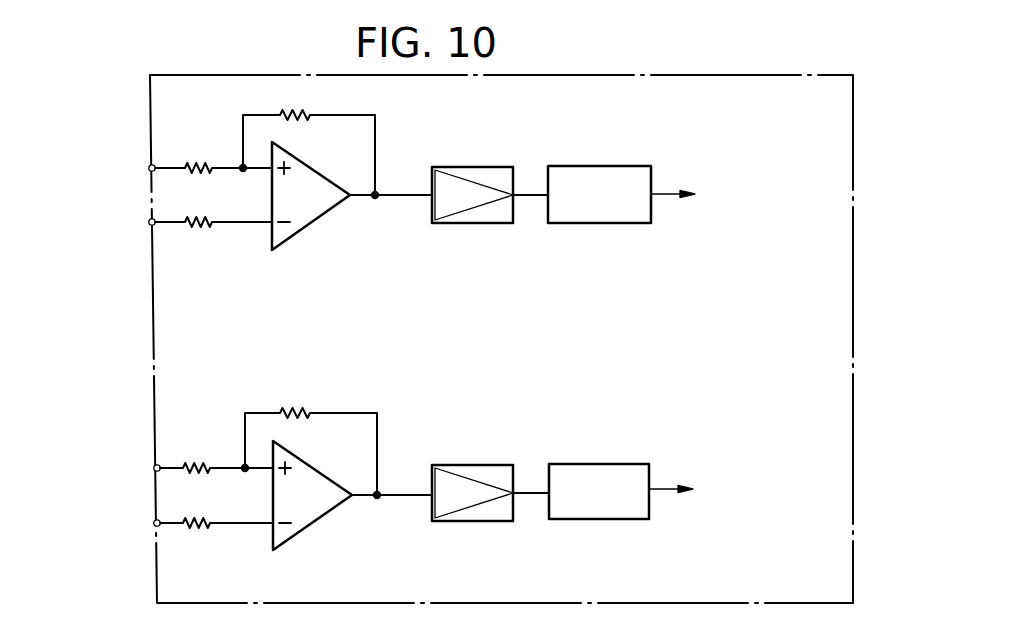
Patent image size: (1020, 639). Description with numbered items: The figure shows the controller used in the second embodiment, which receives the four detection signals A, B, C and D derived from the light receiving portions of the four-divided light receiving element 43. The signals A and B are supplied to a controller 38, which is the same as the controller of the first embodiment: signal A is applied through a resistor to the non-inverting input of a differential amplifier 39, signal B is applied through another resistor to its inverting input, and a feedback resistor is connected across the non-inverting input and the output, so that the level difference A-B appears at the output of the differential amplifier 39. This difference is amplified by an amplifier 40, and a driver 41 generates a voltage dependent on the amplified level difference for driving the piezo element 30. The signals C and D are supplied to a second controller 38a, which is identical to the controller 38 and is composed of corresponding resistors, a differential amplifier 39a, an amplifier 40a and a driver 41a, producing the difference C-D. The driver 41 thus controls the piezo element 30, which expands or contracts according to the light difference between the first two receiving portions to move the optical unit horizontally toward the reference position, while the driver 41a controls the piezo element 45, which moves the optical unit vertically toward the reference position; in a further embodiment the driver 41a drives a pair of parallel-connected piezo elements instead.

The controller 38 is at (531, 226).
The controller 38a is at (530, 524).
The differential amplifier 39 is at (330, 212).
The differential amplifier 39a is at (332, 512).
The amplifier 40 is at (475, 167).
The amplifier 40a is at (480, 465).
The driver 41 is at (603, 166).
The driver 41a is at (610, 464).
The piezo element 30 is at (769, 194).
The 4-divided light receiving element 43 is at (132, 547).
The piezo element 45 is at (769, 502).